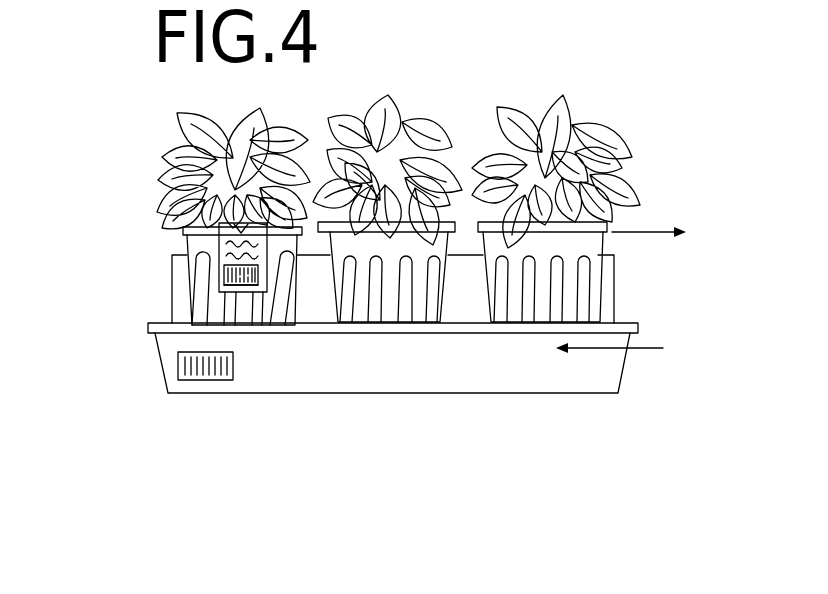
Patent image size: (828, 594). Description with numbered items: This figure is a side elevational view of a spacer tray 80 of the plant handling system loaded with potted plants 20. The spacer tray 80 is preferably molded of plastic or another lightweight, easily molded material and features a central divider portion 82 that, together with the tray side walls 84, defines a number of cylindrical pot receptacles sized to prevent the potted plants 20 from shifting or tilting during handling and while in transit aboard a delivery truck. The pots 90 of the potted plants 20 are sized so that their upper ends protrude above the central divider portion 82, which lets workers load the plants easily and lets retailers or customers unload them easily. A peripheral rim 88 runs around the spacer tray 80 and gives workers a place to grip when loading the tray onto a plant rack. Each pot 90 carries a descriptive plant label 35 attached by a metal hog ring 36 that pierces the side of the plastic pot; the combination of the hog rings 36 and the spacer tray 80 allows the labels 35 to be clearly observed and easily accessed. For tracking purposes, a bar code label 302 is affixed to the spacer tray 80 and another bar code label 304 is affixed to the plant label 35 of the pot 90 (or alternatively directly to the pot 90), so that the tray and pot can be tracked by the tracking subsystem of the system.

The potted plants 20 is at (636, 115).
The metal hog rings 36 is at (237, 213).
The pots 90 is at (183, 241).
The descriptive plant labels 35 is at (222, 270).
The bar code label 304 is at (222, 282).
The spacer tray 80 is at (121, 420).
The central divider portion 82 is at (613, 271).
The peripheral rim 88 is at (638, 330).
The tray side walls 84 is at (627, 362).
The bar code label 302 is at (224, 380).